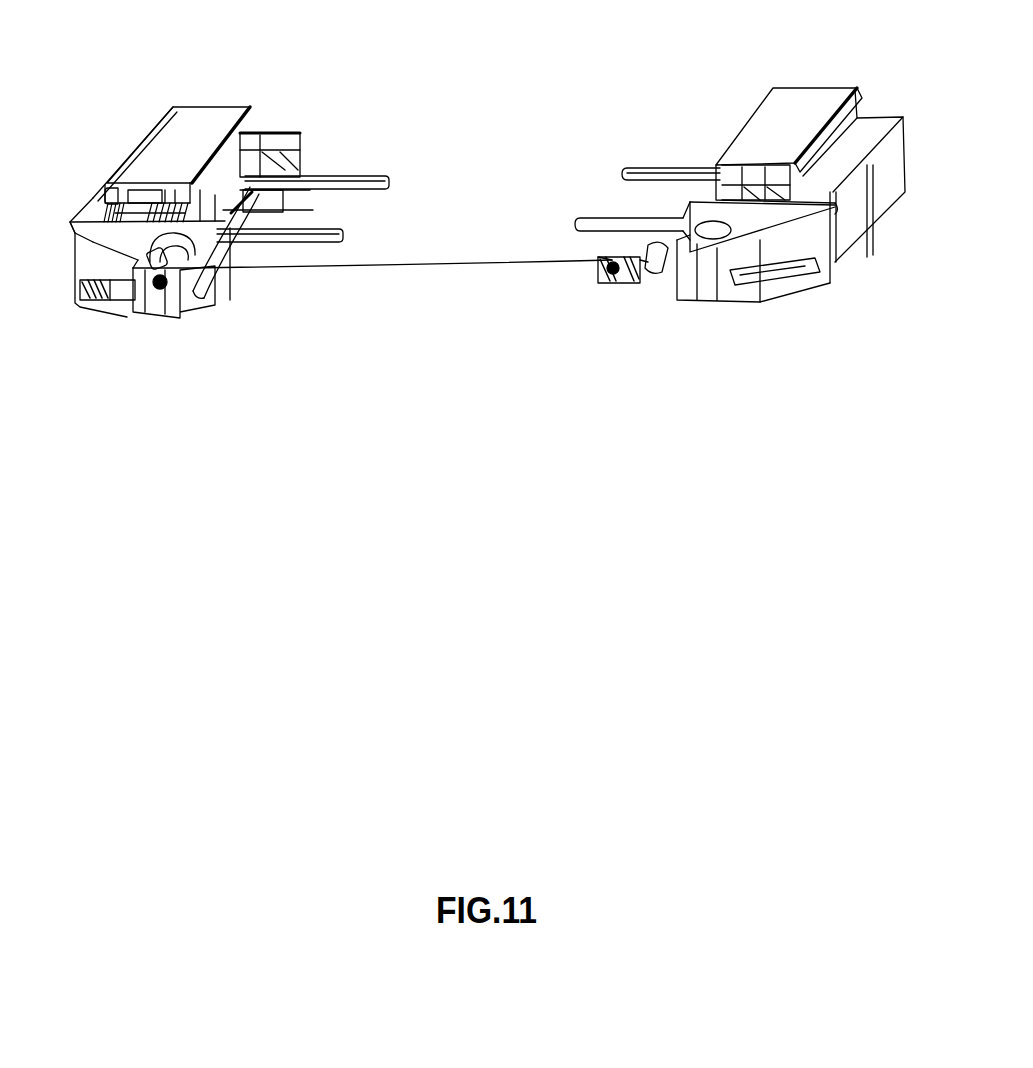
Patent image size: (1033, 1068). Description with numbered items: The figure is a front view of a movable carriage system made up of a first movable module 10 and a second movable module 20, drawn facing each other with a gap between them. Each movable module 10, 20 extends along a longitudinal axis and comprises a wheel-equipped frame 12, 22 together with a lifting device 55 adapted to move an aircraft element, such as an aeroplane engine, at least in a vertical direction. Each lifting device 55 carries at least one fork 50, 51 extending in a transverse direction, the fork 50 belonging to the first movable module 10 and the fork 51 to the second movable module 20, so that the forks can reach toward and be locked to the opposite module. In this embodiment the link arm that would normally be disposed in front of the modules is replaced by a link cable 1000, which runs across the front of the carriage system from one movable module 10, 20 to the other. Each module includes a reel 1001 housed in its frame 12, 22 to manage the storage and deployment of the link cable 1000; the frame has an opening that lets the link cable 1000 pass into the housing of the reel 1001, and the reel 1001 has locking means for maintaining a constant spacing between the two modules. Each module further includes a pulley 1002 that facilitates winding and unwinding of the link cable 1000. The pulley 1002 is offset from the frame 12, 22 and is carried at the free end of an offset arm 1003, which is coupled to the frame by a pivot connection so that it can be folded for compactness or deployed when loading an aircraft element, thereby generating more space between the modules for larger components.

The first movable module 10 is at (249, 72).
The frame 12 is at (97, 199).
The second movable module 20 is at (737, 77).
The frame 22 is at (867, 243).
The fork 50 is at (383, 177).
The fork 51 is at (633, 167).
The lifting device 55 is at (177, 105).
The link cable 1000 is at (123, 317).
The reel 1001 is at (77, 307).
The pulley 1002 is at (618, 284).
The offset arm 1003 is at (660, 264).